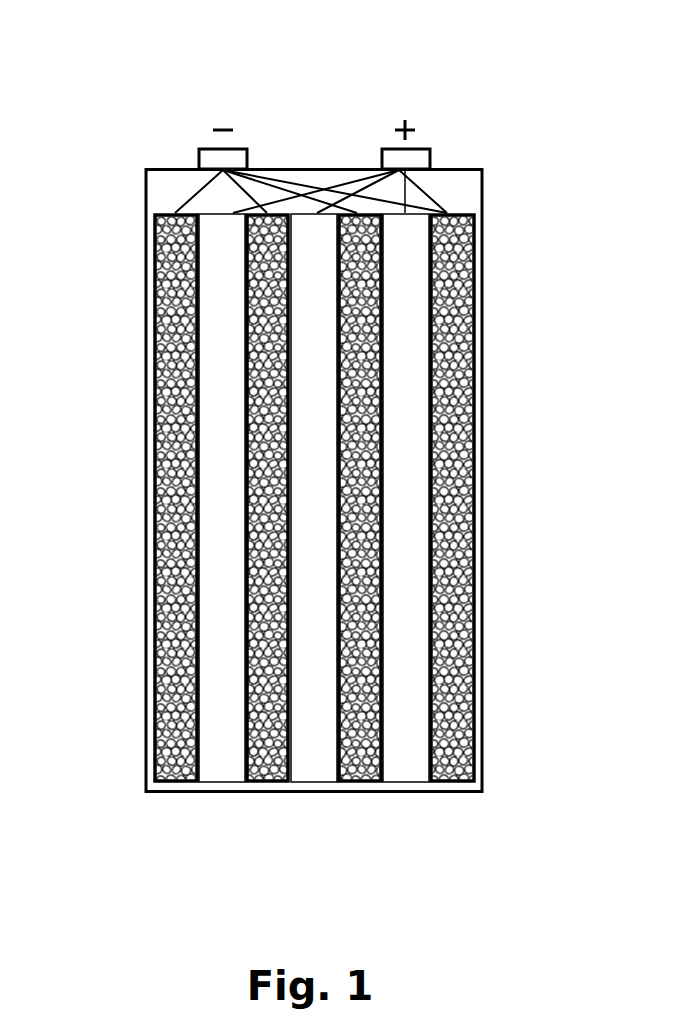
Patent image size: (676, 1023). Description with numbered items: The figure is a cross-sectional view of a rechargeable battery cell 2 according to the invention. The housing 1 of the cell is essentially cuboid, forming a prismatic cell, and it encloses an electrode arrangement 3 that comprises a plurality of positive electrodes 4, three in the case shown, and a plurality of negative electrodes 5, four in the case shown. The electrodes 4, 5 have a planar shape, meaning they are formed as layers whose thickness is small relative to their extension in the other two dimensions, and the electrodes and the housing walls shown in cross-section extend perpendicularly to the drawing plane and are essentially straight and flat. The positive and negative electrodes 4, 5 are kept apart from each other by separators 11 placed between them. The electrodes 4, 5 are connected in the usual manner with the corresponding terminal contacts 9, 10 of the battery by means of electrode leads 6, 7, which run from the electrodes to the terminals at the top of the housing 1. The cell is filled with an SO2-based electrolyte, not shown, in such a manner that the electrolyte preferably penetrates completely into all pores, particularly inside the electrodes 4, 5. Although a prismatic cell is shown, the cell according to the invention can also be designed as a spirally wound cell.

The housing 1 is at (485, 292).
The rechargeable battery cell 2 is at (137, 367).
The electrode arrangement 3 is at (403, 393).
The positive electrodes 4 is at (221, 765).
The negative electrodes 5 is at (176, 765).
The electrode lead 6 is at (422, 178).
The electrode lead 7 is at (207, 178).
The terminal contact 9 is at (420, 155).
The terminal contact 10 is at (238, 155).
The separators 11 is at (247, 547).